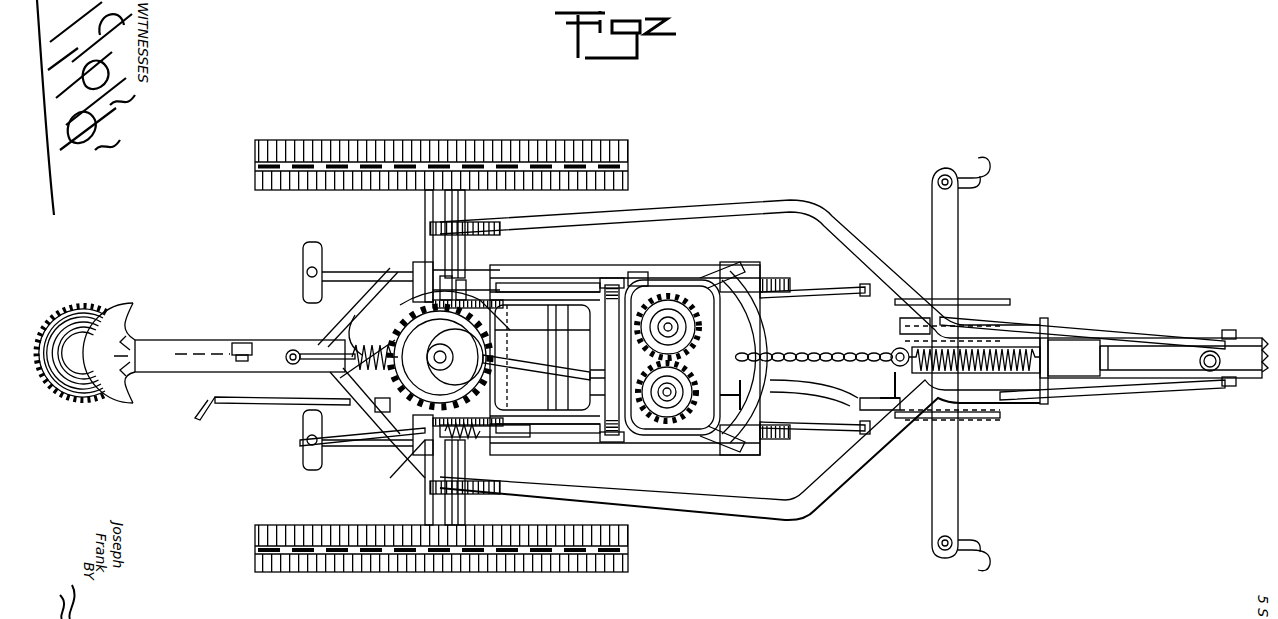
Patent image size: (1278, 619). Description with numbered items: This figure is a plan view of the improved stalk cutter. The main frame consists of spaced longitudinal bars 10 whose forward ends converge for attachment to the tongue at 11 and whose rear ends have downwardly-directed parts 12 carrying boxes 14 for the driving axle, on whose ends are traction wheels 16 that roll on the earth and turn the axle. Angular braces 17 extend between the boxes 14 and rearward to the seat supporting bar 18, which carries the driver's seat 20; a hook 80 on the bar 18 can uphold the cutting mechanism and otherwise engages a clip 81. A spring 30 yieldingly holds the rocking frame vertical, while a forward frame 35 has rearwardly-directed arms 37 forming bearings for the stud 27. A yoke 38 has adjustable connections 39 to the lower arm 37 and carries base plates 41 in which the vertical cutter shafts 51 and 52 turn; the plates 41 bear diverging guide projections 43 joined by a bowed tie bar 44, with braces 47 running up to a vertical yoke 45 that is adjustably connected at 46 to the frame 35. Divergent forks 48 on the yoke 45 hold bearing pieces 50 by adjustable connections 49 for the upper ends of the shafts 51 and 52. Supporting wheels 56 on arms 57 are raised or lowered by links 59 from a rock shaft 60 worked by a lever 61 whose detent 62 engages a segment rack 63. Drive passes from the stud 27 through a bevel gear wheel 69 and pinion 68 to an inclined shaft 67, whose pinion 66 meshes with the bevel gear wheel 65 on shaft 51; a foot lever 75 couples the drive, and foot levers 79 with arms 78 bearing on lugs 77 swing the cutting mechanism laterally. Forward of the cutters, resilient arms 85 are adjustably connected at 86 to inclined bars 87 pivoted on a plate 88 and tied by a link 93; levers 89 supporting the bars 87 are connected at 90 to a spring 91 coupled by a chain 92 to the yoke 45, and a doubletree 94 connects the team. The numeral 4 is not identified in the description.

The shaft 4 is at (902, 382).
The longitudinal bars 10 is at (715, 208).
The tongue attachment 11 is at (1100, 378).
The downwardly-directed parts 12 is at (425, 215).
The boxes 14 is at (465, 210).
The traction wheels 16 is at (468, 150).
The angular braces 17 is at (340, 322).
The seat supporting bar 18 is at (168, 340).
The driver's seat 20 is at (75, 303).
The shaft or stud 27 is at (405, 365).
The spring 30 is at (372, 312).
The frame 35 is at (580, 308).
The rearwardly-directed arms 37 is at (412, 285).
The yoke 38 is at (572, 290).
The adjustable connections 39 is at (460, 300).
The base plates 41 is at (668, 275).
The guide projections 43 is at (845, 361).
The tie bar 44 is at (776, 354).
The vertical yoke 45 is at (638, 272).
The adjustable connection 46 is at (614, 280).
The braces 47 is at (820, 290).
The divergent forks 48 is at (752, 272).
The adjustable connections 49 is at (705, 270).
The bearing pieces 50 is at (690, 318).
The cutter shaft 51 is at (676, 392).
The cutter shaft 52 is at (720, 322).
The supporting wheels 56 is at (785, 280).
The arms 57 is at (735, 268).
The links 59 is at (555, 292).
The rock shaft 60 is at (548, 318).
The lever 61 is at (360, 440).
The detent 62 is at (405, 445).
The segment rack 63 is at (515, 440).
The bevel gear wheel 65 is at (745, 396).
The bevel gear pinion 66 is at (600, 394).
The shaft 67 is at (535, 376).
The bevel gear pinion 68 is at (470, 385).
The bevel gear wheel 69 is at (440, 357).
The controlling lever 75 is at (262, 404).
The lugs 77 is at (413, 275).
The upwardly-extended arms 78 is at (452, 285).
The foot levers 79 is at (303, 262).
The hook 80 is at (320, 358).
The clip 81 is at (240, 358).
The resilient bent arms 85 is at (1005, 299).
The adjustable connection 86 is at (905, 318).
The inclined bars 87 is at (1010, 327).
The plate 88 is at (1228, 386).
The levers 89 is at (1128, 385).
The connection 90 is at (1050, 370).
The spring 91 is at (975, 356).
The chain 92 is at (897, 349).
The link or tie 93 is at (1025, 398).
The doubletree 94 is at (932, 493).